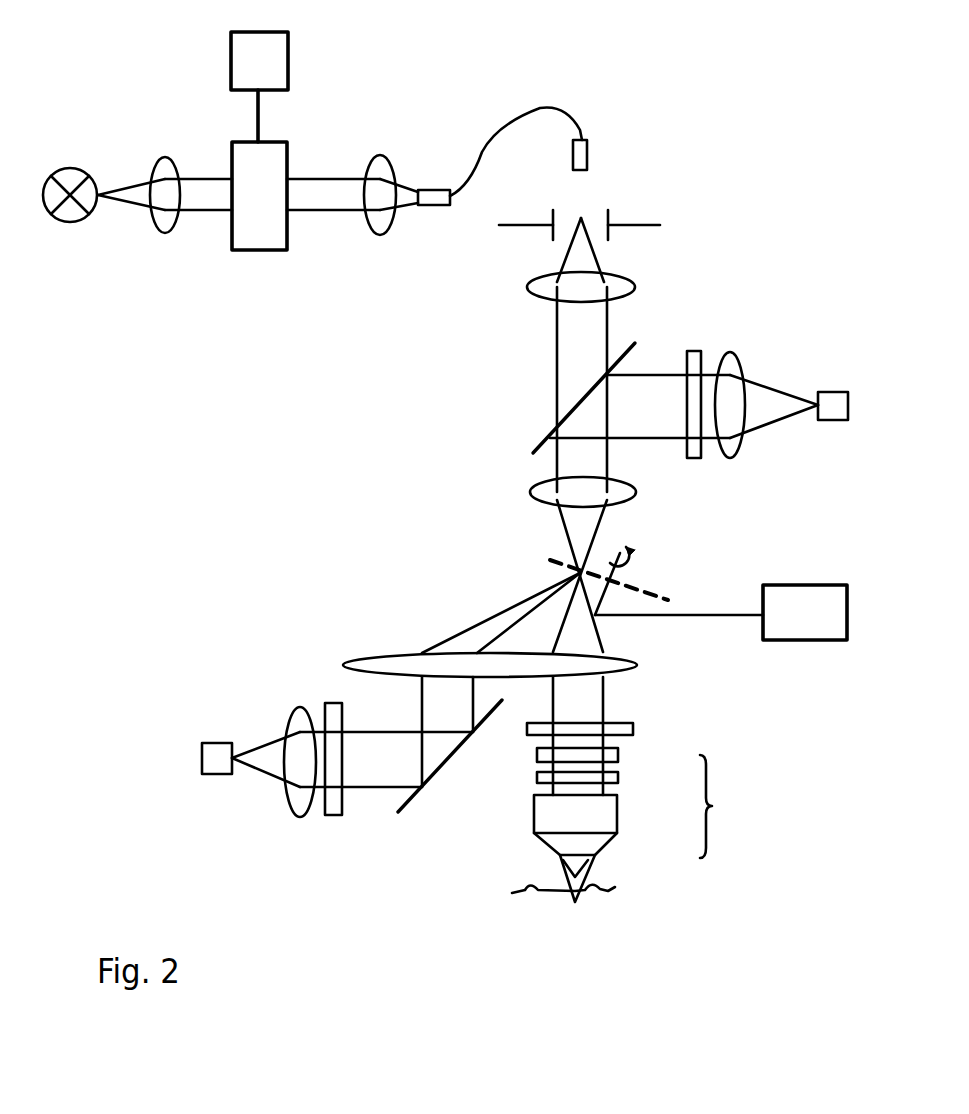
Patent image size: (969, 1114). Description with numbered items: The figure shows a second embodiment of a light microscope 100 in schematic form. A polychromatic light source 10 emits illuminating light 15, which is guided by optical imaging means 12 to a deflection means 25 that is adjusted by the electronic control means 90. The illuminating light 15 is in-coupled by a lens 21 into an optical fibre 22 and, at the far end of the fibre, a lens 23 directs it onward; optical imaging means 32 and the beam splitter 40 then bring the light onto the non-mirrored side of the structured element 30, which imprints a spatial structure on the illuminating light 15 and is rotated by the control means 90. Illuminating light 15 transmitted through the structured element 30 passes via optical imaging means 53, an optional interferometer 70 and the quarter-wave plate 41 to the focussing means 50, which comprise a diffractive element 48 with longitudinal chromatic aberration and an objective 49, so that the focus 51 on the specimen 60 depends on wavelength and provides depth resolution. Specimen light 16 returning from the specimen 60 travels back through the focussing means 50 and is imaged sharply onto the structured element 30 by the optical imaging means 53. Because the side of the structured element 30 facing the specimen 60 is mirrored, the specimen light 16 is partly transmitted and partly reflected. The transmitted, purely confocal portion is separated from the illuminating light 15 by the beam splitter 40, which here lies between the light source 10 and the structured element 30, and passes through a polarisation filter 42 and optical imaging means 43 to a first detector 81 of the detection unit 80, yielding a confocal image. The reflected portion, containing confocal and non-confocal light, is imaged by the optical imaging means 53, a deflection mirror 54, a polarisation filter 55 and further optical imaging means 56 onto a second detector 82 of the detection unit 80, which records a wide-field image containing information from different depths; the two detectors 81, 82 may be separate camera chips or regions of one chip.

The light microscope 100 is at (672, 80).
The polychromatic light source 10 is at (75, 172).
The optical imaging means 12 is at (165, 170).
The illuminating light 15 is at (127, 198).
The specimen light 16 is at (663, 415).
The lens 21 is at (380, 170).
The optical fibre 22 is at (500, 130).
The lens 23 is at (533, 283).
The deflection means 25 is at (273, 206).
The structured element 30 is at (556, 558).
The optical imaging means 32 is at (535, 490).
The beam splitter 40 is at (557, 432).
The λ/4 plate 41 is at (545, 750).
The polarisation filter 42 is at (693, 362).
The optical imaging means 43 is at (728, 445).
The diffractive element 48 is at (600, 776).
The objective 49 is at (590, 843).
The focussing means 50 is at (726, 806).
The focus 51 is at (590, 893).
The optical imaging means 53 is at (617, 665).
The deflection mirror 54 is at (413, 812).
The polarisation filter 55 is at (333, 812).
The optical imaging means 56 is at (290, 795).
The specimen 60 is at (528, 893).
The interferometer 70 is at (618, 728).
The detection unit 80 is at (858, 377).
The first detector 81 is at (832, 388).
The second detector 82 is at (213, 760).
The electronic control means 90 is at (273, 74).